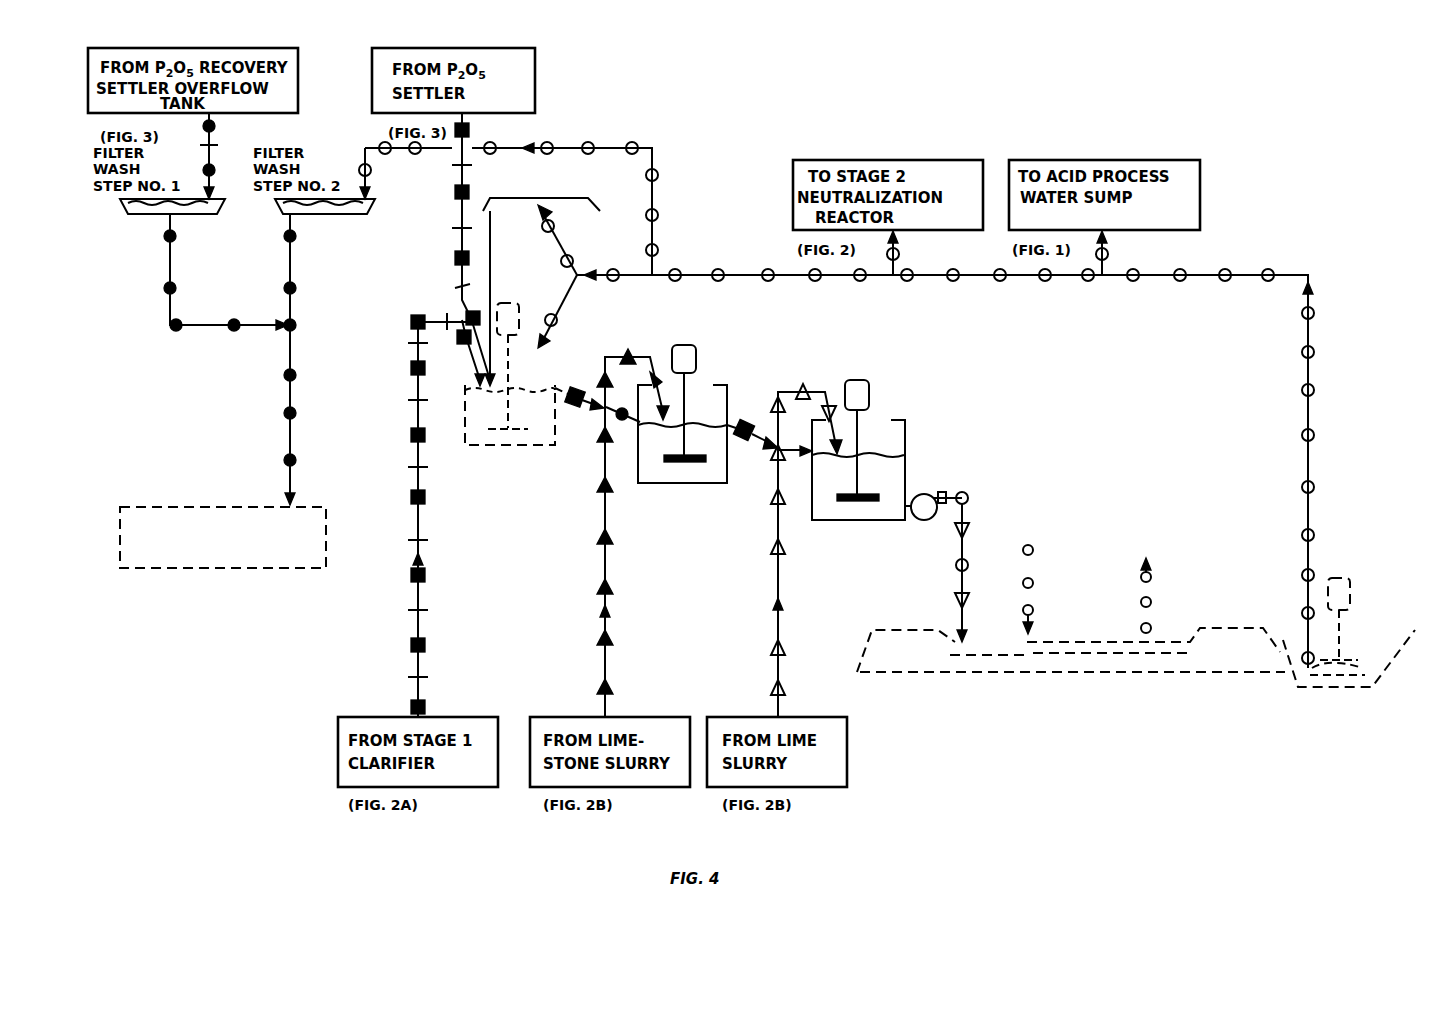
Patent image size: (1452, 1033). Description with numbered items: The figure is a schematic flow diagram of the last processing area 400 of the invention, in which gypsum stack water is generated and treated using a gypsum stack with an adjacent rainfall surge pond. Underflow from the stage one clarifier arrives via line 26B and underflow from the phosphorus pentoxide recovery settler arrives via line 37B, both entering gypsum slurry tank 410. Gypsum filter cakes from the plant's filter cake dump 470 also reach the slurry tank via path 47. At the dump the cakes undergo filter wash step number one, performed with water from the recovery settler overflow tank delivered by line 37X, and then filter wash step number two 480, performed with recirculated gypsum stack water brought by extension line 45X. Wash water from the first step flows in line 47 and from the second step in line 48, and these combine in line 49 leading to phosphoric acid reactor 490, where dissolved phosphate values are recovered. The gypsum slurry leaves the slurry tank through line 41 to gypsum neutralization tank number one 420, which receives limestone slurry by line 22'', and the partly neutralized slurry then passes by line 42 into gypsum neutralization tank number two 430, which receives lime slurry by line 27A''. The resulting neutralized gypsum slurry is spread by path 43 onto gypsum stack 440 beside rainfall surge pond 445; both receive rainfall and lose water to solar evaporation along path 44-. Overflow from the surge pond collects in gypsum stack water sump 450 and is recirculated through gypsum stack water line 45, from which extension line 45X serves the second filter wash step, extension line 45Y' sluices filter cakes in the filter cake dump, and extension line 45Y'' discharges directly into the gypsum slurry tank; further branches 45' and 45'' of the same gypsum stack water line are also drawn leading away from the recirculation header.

The wash water line 37X is at (212, 147).
The filter cake dump 470 is at (153, 214).
The extension line 45X is at (368, 184).
The wash water line 48 is at (290, 264).
The filter wash step No. 2 480 is at (338, 214).
The filter cake path 47 is at (194, 328).
The combined wash water line 49 is at (290, 413).
The phosphoric acid reactor 490 is at (208, 568).
The underflow line 37B is at (462, 284).
The last processing area 400 is at (668, 134).
The gypsum stack water line 45 is at (962, 454).
The gypsum stack water line to stage 2 neutralization reactor 45'' is at (933, 253).
The gypsum stack water line to acid process water sump 45' is at (1133, 253).
The extension line 45Y' is at (586, 240).
The extension line 45Y'' is at (540, 307).
The gypsum slurry line 41 is at (586, 393).
The gypsum slurry tank 410 is at (555, 448).
The slurry transfer valve to tank no. 2 42 is at (757, 430).
The gypsum neutralization tank No. 2 420 is at (727, 470).
The gypsum neutralization tank no. 2 with pump 430 is at (911, 493).
The slurry path 43 is at (961, 570).
The solar evaporation loss 44- is at (1142, 580).
The rainfall surge pond 445 is at (1102, 622).
The gypsum stack 440 is at (850, 667).
The gypsum stack water sump 450 is at (1382, 648).
The underflow line 26B is at (418, 636).
The limestone slurry line 22'' is at (594, 520).
The lime slurry line 27A'' is at (769, 533).